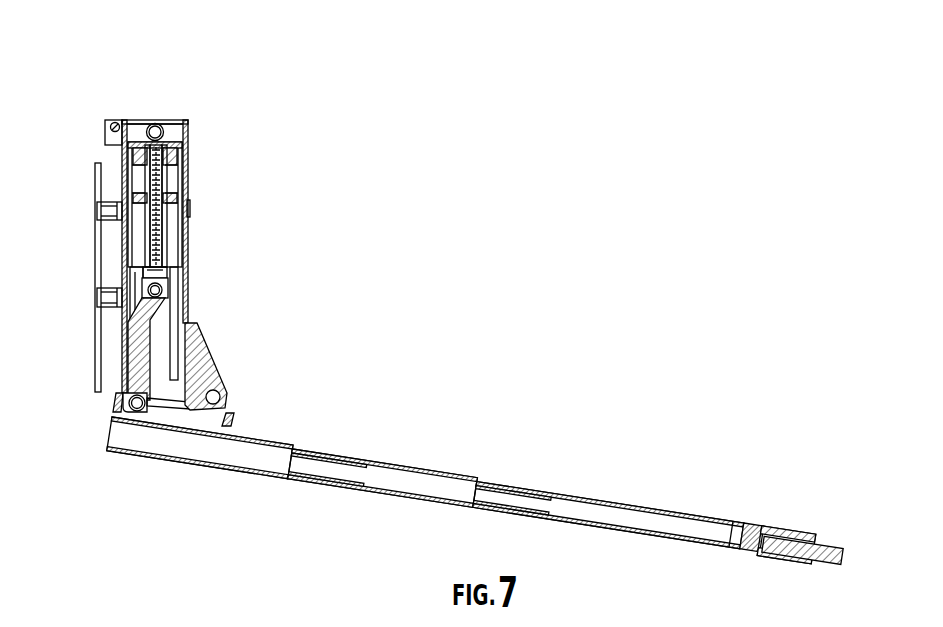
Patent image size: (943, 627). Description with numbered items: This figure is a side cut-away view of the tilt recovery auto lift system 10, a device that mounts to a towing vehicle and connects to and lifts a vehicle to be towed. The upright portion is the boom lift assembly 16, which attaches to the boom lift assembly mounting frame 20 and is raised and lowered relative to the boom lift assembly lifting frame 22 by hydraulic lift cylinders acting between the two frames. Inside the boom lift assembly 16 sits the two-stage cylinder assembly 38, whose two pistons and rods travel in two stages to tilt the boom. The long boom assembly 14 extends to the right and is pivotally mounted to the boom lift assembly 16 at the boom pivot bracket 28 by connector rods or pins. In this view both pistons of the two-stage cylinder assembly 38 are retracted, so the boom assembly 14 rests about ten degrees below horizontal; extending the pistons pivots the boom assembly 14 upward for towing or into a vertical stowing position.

The tilt recovery auto lift system assembly 10 is at (193, 104).
The boom assembly 14 is at (409, 430).
The boom lift assembly 16 is at (131, 113).
The boom lift assembly mounting frame 20 is at (95, 240).
The boom lift assembly lifting frame 22 is at (104, 147).
The boom pivot bracket 28 is at (211, 363).
The two-stage cylinder assembly 38 is at (178, 176).